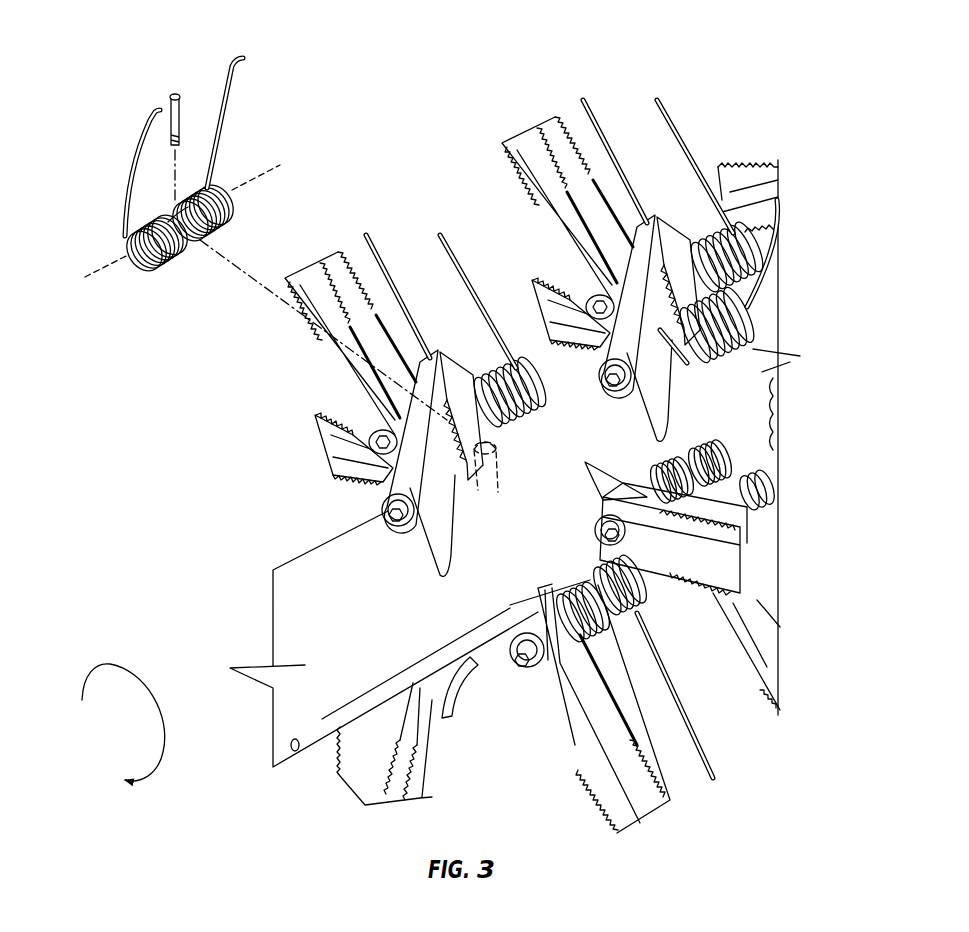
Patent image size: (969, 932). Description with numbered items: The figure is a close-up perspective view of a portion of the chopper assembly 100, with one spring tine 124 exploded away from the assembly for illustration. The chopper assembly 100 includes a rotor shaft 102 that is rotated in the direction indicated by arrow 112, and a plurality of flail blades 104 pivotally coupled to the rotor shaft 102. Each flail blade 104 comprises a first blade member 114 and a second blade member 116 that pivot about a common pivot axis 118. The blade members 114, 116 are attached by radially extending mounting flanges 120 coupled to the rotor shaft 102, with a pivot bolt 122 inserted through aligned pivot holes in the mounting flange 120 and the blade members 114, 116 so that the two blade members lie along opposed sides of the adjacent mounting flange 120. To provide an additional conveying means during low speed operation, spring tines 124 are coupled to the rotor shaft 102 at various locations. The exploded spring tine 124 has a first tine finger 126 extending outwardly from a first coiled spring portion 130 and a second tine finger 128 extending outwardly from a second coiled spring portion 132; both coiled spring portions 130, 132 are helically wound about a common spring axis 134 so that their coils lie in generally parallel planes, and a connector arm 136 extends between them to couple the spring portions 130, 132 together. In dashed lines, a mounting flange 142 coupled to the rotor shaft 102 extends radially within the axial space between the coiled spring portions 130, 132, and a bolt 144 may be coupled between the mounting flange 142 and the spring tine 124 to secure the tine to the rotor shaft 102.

The chopper assembly 100 is at (449, 456).
The rotor shaft 102 is at (298, 628).
The flail blade 104 is at (544, 478).
The arrow 112 is at (158, 717).
The first blade member 114 is at (302, 280).
The second blade member 116 is at (338, 267).
The common pivot axis 118 is at (380, 522).
The mounting flange 120 is at (537, 610).
The pivot bolt 122 is at (383, 513).
The spring tine 124 is at (449, 384).
The first tine finger 126 is at (140, 137).
The second tine finger 128 is at (232, 68).
The first coiled spring portion 130 is at (167, 267).
The second coiled spring portion 132 is at (236, 210).
The common spring axis 134 is at (100, 268).
The connector arm 136 is at (170, 207).
The mounting flange 142 is at (500, 457).
The bolt 144 is at (172, 93).